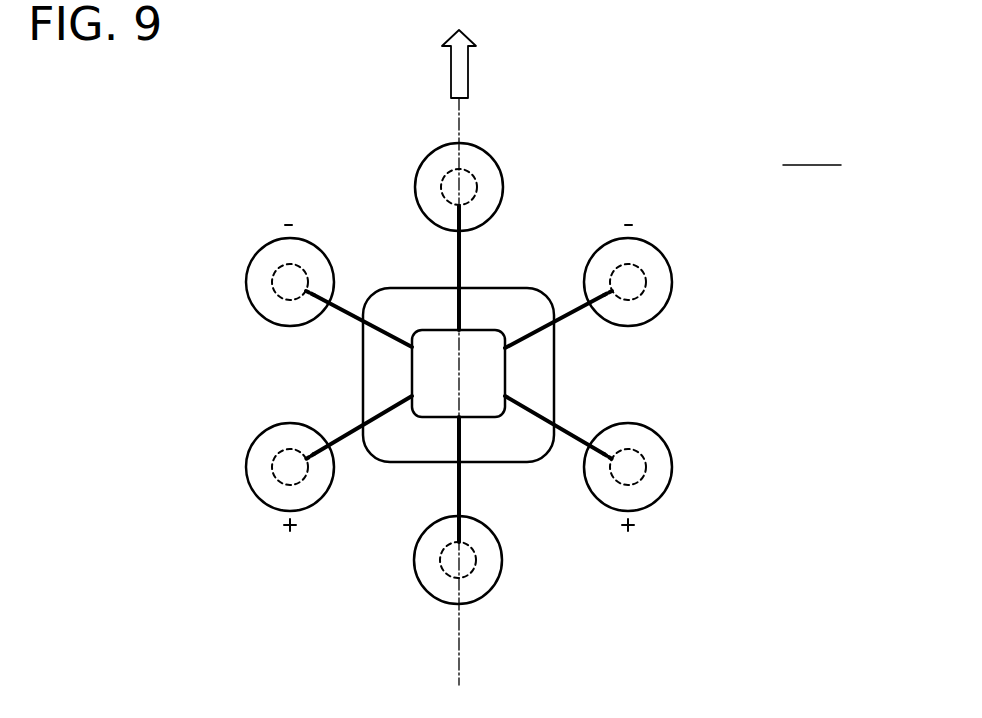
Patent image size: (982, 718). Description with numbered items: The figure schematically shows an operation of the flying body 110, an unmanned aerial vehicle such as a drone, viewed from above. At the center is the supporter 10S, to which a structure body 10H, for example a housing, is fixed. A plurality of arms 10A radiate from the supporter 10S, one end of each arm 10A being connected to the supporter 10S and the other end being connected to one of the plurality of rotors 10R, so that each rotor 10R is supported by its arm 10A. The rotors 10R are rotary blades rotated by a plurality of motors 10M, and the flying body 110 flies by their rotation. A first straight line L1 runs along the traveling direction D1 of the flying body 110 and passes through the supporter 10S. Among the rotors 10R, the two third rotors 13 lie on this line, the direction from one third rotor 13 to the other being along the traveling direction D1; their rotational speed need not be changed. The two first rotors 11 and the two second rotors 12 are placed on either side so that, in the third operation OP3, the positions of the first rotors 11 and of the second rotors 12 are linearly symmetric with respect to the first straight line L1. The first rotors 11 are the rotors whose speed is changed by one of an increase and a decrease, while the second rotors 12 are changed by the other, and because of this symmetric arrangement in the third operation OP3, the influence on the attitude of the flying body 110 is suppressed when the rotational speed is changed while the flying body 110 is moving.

The flying body 110 is at (650, 172).
The arm 10A is at (570, 305).
The structure body 10H is at (554, 382).
The supporter 10S is at (462, 417).
The rotor 10R is at (672, 273).
The motor 10M is at (648, 288).
The first rotor 11 is at (262, 431).
The second rotor 12 is at (262, 244).
The third rotor 13 is at (486, 150).
The traveling direction D1 is at (468, 68).
The first straight line L1 is at (460, 672).
The third operation OP3 is at (812, 152).